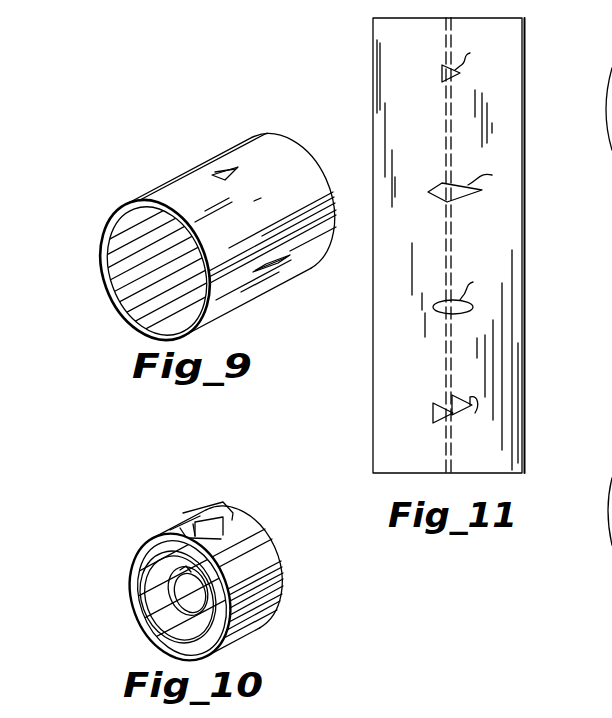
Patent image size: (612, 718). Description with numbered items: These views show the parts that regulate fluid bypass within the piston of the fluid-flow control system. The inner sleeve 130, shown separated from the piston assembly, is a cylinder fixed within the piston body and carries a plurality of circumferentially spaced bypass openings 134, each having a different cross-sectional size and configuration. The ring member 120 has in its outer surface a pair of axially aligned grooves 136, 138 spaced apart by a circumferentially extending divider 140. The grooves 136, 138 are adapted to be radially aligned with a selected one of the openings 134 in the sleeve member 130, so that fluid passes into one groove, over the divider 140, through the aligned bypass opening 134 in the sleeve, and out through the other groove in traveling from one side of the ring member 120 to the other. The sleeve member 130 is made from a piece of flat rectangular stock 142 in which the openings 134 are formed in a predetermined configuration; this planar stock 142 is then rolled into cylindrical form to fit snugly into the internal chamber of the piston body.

In FIG. 10, the ring member 120 is at (260, 557).
In FIG. 9, the inner sleeve 130 is at (293, 163).
In FIG. 9, the bypass openings 134 is at (222, 165).
In FIG. 11, the bypass openings 134 is at (438, 76).
In FIG. 10, the groove 136 is at (185, 536).
In FIG. 10, the groove 138 is at (237, 512).
In FIG. 10, the divider 140 is at (232, 518).
In FIG. 11, the flat rectangular stock 142 is at (503, 248).